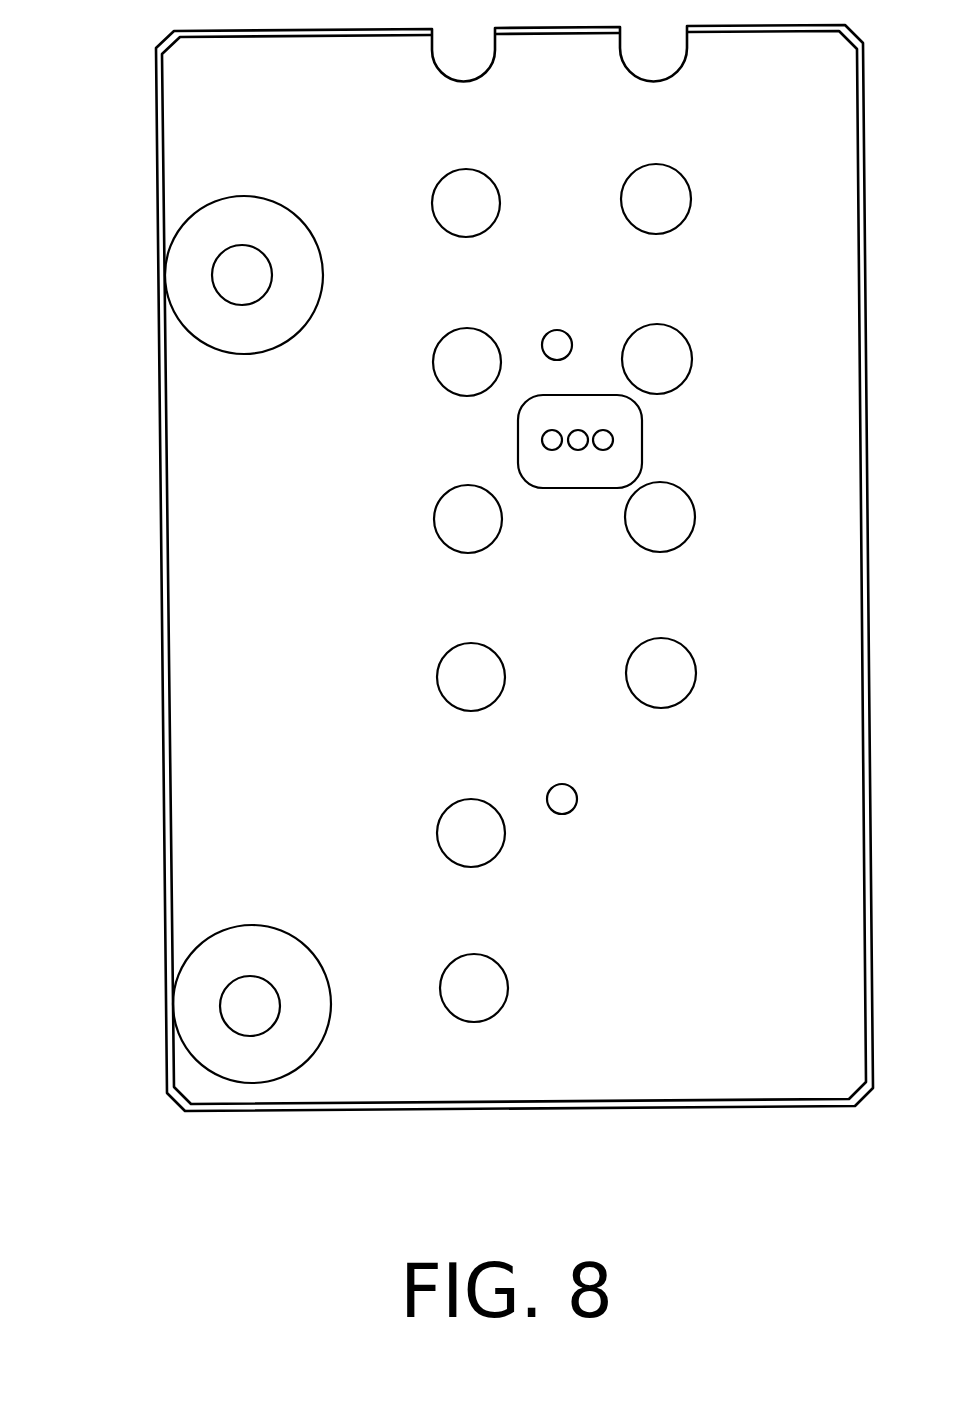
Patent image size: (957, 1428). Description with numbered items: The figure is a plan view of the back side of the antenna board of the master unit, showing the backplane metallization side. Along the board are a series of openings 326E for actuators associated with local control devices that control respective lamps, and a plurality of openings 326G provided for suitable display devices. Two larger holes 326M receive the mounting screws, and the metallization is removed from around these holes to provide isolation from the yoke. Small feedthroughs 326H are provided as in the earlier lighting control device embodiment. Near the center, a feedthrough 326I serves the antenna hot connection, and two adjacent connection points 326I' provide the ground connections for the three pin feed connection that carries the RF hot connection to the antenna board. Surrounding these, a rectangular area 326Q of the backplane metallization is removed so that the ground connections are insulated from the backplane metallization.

The openings for actuators 326E is at (460, 50).
The openings for display devices 326G is at (660, 57).
The feedthroughs 326H is at (560, 340).
The holes for mounting screws 326M is at (222, 266).
The rectangular area of removed backplane metallization 326Q is at (530, 412).
The feedthrough for antenna hot connection 326I is at (567, 492).
The ground connection points 326I' is at (670, 418).